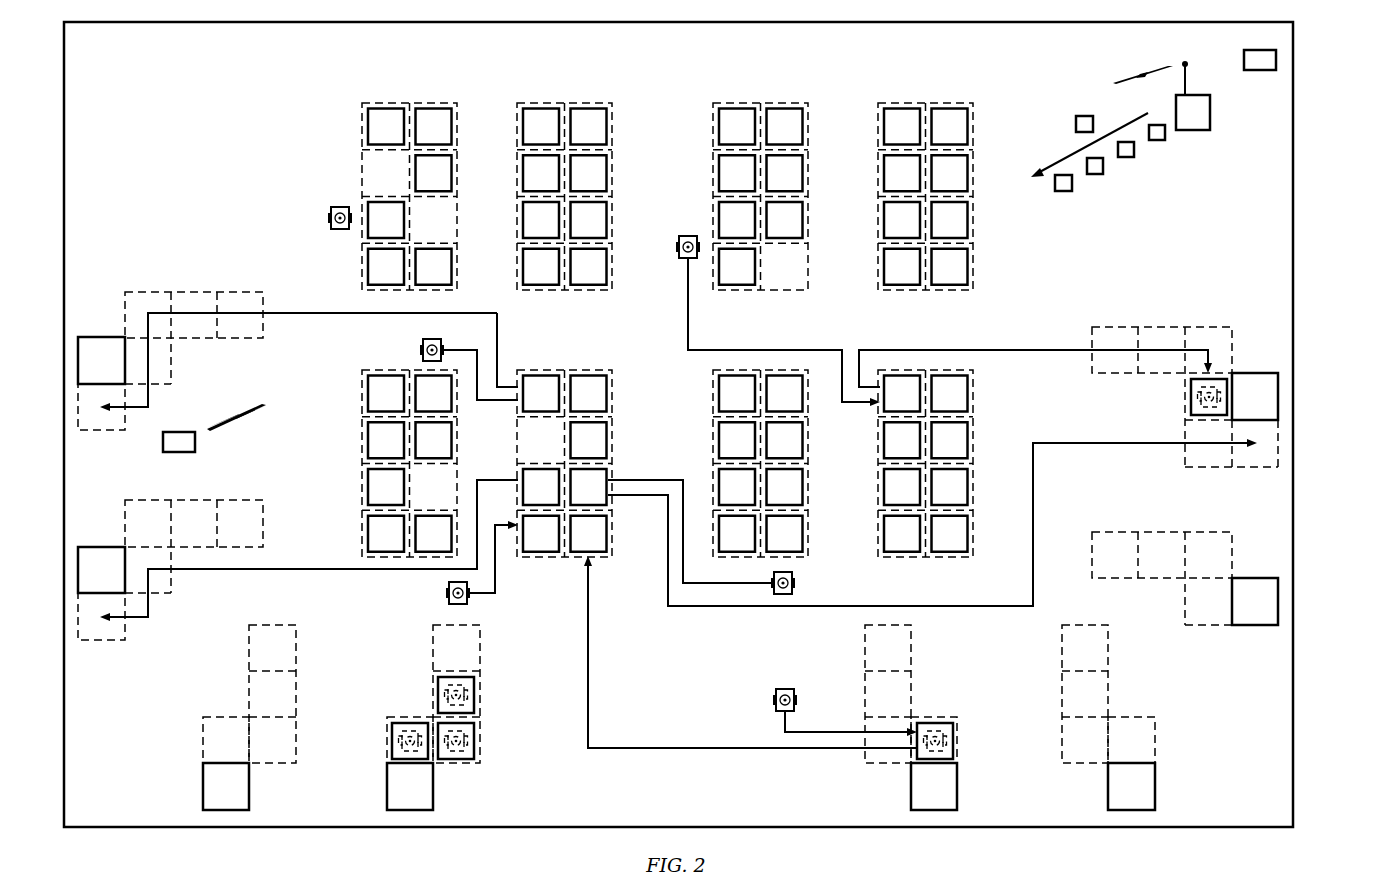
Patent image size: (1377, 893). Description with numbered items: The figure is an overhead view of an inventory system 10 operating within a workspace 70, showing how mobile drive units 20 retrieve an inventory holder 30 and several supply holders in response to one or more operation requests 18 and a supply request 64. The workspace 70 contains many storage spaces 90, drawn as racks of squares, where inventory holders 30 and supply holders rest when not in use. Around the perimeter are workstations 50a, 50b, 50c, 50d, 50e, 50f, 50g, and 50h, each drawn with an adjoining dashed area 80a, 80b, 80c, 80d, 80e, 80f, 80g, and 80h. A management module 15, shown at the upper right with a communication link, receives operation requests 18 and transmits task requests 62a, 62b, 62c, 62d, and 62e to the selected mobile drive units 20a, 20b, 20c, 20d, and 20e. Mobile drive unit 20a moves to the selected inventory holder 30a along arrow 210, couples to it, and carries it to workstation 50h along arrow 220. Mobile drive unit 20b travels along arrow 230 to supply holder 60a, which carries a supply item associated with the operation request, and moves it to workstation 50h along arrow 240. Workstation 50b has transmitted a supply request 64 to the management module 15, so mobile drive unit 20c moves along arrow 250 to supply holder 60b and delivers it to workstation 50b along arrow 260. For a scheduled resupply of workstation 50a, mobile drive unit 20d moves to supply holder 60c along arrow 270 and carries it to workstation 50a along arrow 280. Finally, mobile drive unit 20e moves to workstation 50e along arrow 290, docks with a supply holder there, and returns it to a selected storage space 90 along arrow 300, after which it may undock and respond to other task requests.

The inventory system 10 is at (1322, 152).
The management module 15 is at (1197, 130).
The operation request 18 is at (1258, 70).
The mobile drive unit 20 is at (338, 206).
The mobile drive unit 20a is at (688, 236).
The mobile drive unit 20b is at (795, 583).
The mobile drive unit 20c is at (446, 593).
The mobile drive unit 20d is at (420, 350).
The mobile drive unit 20e is at (773, 700).
The inventory holder 30 is at (901, 108).
The inventory holder 30a is at (897, 375).
The workstation 50a is at (108, 337).
The workstation 50b is at (108, 547).
The workstation 50c is at (203, 790).
The workstation 50d is at (387, 790).
The workstation 50e is at (957, 790).
The workstation 50f is at (1155, 790).
The workstation 50g is at (1255, 625).
The workstation 50h is at (1252, 373).
The supply holder 60a is at (608, 472).
The supply holder 60b is at (522, 472).
The supply holder 60c is at (540, 375).
The task request 62a is at (1063, 191).
The task request 62b is at (1095, 174).
The task request 62c is at (1126, 157).
The task request 62d is at (1157, 140).
The task request 62e is at (1083, 116).
The supply request 64 is at (163, 442).
The workspace 70 is at (208, 137).
The staging area 80a is at (246, 292).
The staging area 80b is at (246, 500).
The staging area 80c is at (249, 645).
The staging area 80d is at (433, 645).
The staging area 80e is at (911, 645).
The staging area 80f is at (1108, 645).
The staging area 80g is at (1112, 532).
The staging area 80h is at (1112, 327).
The storage space 90 is at (884, 114).
The arrow 210 is at (686, 304).
The arrow 220 is at (1034, 350).
The arrow 230 is at (642, 482).
The arrow 240 is at (790, 606).
The arrow 250 is at (497, 578).
The arrow 260 is at (342, 569).
The arrow 270 is at (497, 322).
The arrow 280 is at (320, 313).
The arrow 290 is at (824, 732).
The arrow 300 is at (662, 748).